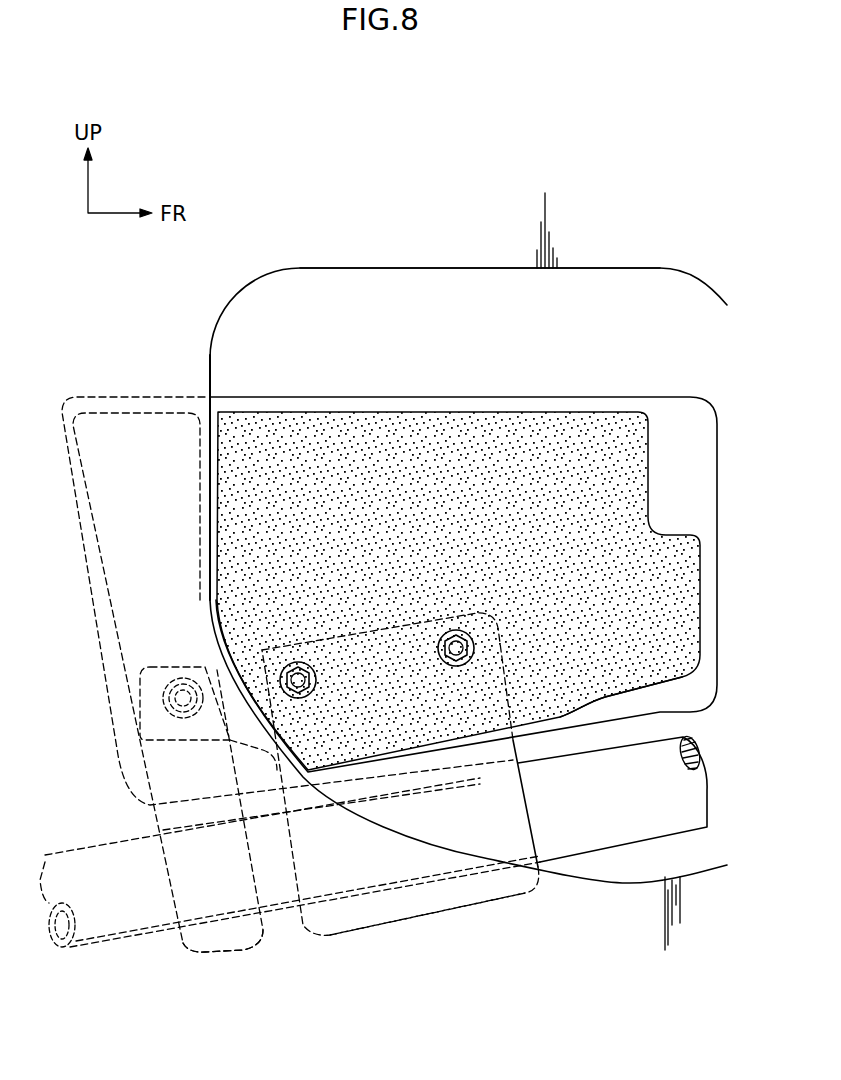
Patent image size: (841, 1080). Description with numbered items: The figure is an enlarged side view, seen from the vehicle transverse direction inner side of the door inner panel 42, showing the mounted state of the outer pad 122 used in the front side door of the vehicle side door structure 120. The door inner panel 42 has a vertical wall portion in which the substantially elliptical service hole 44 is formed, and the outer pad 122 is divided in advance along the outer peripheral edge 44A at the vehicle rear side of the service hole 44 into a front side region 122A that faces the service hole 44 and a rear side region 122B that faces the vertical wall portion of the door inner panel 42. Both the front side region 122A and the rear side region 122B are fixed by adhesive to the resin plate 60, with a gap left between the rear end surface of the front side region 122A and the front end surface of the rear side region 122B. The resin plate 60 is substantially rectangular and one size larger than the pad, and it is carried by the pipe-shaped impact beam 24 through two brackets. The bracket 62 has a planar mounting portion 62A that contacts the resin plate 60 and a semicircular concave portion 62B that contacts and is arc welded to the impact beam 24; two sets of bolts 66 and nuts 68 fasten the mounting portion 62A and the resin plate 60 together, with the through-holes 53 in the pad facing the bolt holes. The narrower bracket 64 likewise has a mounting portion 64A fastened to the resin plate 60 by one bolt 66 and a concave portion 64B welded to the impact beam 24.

The door inner panel 42 is at (300, 248).
The service hole 44 is at (447, 268).
The outer peripheral edge 44A is at (212, 460).
The resin plate 60 is at (632, 397).
The vehicle side door structure 120 is at (157, 332).
The outer pad 122 is at (490, 330).
The front side region 122A is at (452, 412).
The rear side region 122B is at (174, 410).
The bracket 64 is at (201, 829).
The mounting portion 64A is at (143, 672).
The concave portion 64B is at (217, 945).
The bracket 62 is at (472, 814).
The mounting portion 62A is at (582, 702).
The concave portion 62B is at (440, 907).
The impact beam 24 is at (607, 845).
The bolt 66 is at (298, 679).
The nut 68 is at (289, 668).
The through-hole 53 is at (445, 662).